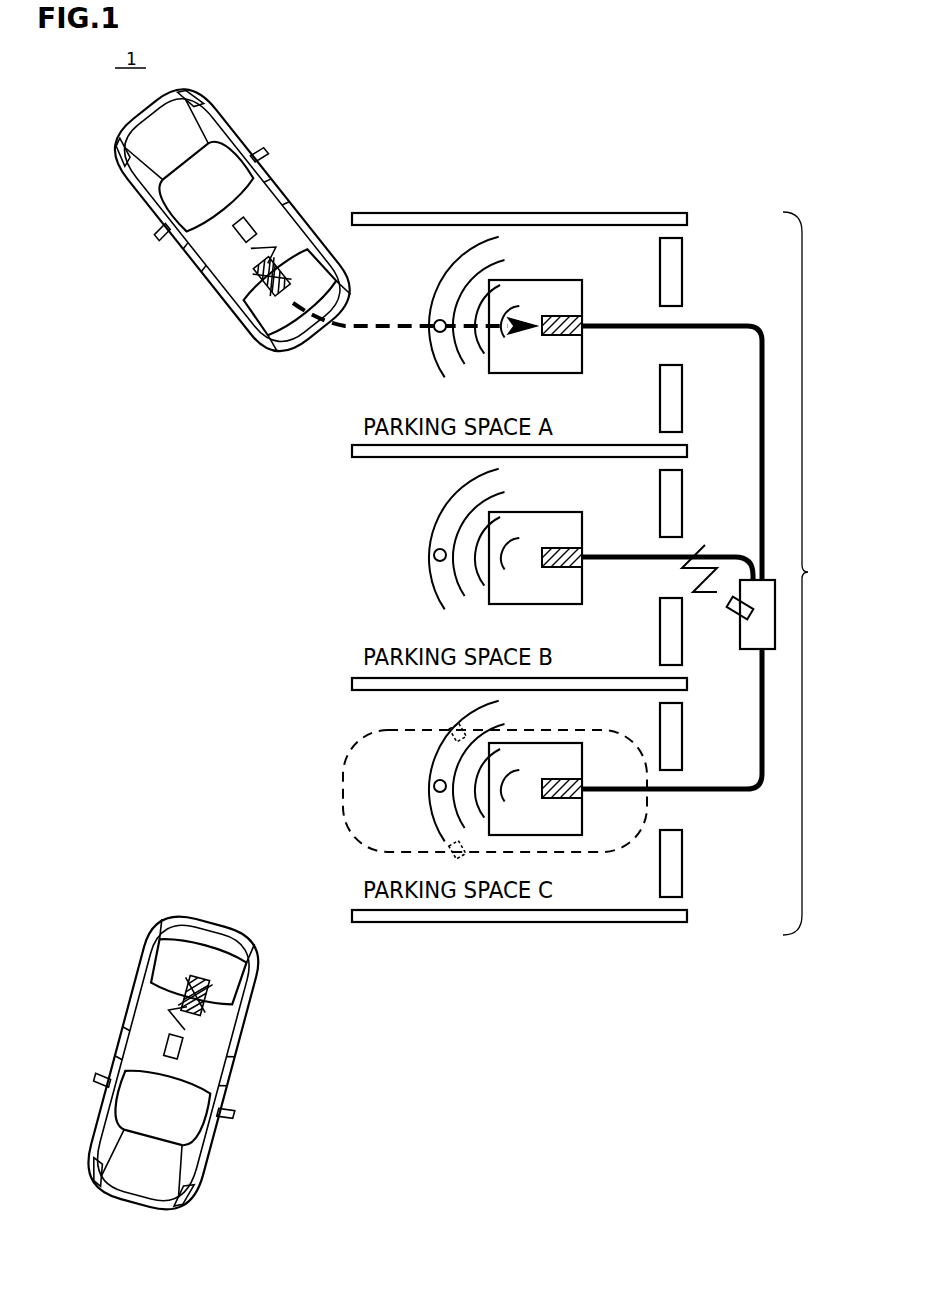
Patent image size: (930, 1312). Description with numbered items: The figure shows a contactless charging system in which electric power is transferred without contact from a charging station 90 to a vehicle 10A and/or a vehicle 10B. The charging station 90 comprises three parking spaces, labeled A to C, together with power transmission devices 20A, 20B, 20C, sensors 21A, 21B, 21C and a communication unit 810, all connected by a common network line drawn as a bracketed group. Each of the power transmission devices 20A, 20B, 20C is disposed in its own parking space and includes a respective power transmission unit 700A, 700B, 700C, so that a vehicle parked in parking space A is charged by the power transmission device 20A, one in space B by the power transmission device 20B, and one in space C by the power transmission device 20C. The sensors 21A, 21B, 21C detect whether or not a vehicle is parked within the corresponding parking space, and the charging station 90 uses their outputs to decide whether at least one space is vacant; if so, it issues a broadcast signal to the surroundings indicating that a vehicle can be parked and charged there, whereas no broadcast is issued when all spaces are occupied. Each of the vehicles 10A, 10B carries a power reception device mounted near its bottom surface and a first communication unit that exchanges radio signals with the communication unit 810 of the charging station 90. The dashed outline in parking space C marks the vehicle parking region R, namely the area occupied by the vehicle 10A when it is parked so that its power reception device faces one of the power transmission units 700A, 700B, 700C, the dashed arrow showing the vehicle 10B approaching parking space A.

The vehicle 10A is at (125, 1015).
The vehicle 10B is at (240, 338).
The power transmission device 20A is at (528, 280).
The power transmission device 20B is at (528, 512).
The power transmission device 20C is at (528, 743).
The sensor 21A is at (440, 319).
The sensor 21B is at (440, 548).
The sensor 21C is at (437, 779).
The power transmission unit 700A is at (557, 317).
The power transmission unit 700B is at (560, 548).
The power transmission unit 700C is at (560, 779).
The communication unit 810 is at (730, 620).
The charging station 90 is at (793, 573).
The vehicle parking region R is at (355, 846).